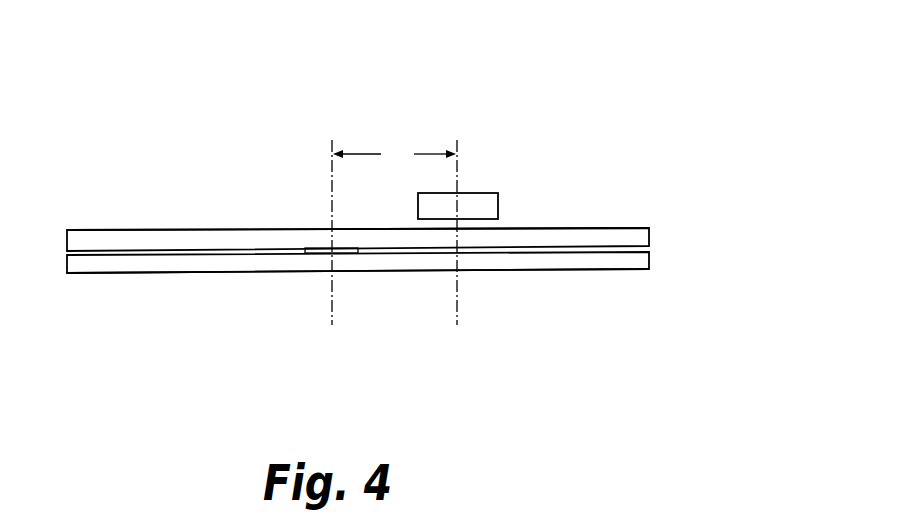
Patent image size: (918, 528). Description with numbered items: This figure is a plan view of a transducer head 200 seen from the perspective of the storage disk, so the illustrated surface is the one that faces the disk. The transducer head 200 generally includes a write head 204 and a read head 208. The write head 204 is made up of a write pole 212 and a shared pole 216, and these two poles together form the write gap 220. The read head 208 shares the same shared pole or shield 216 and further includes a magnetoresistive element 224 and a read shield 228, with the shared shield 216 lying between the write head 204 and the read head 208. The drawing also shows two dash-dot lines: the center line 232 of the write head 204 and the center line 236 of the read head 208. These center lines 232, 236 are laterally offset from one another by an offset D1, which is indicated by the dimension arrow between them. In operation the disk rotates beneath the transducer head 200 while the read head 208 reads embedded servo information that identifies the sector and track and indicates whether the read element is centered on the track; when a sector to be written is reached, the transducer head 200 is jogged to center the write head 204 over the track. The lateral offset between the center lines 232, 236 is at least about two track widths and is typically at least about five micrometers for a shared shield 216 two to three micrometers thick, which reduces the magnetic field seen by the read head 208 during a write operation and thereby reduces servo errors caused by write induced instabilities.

The transducer head 200 is at (342, 119).
The write head 204 is at (509, 174).
The read head 208 is at (301, 291).
The write pole 212 is at (481, 190).
The shared pole 216 is at (637, 234).
The write gap 220 is at (500, 223).
The magnetoresistive element 224 is at (337, 250).
The read shield 228 is at (568, 262).
The center line of the write head 232 is at (458, 298).
The center line of the read head 236 is at (330, 187).